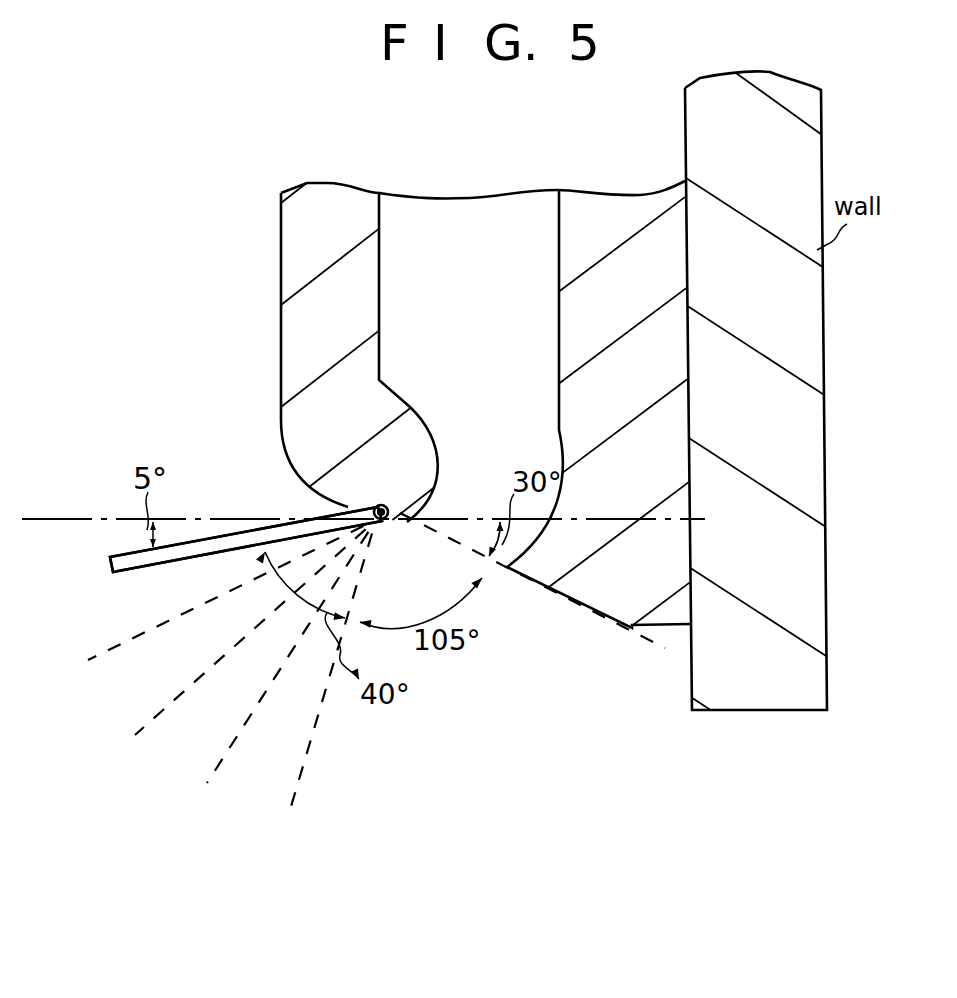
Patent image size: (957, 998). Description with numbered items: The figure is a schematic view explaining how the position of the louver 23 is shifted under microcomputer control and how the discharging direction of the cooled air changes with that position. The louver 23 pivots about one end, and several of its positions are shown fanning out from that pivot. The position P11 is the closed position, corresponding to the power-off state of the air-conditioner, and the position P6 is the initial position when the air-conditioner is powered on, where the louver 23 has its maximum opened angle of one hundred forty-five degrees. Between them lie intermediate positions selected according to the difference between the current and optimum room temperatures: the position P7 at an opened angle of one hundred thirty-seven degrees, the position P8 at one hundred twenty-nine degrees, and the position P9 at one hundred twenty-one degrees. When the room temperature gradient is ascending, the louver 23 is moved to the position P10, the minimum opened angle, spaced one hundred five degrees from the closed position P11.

The louver 23 is at (222, 545).
The position P6 of the louver P6 is at (224, 547).
The position P7 of the louver P7 is at (205, 607).
The position P8 of the louver P8 is at (241, 649).
The position P9 of the louver P9 is at (277, 677).
The position P10 of the louver P10 is at (321, 691).
The position P11 of the louver P11 is at (553, 604).